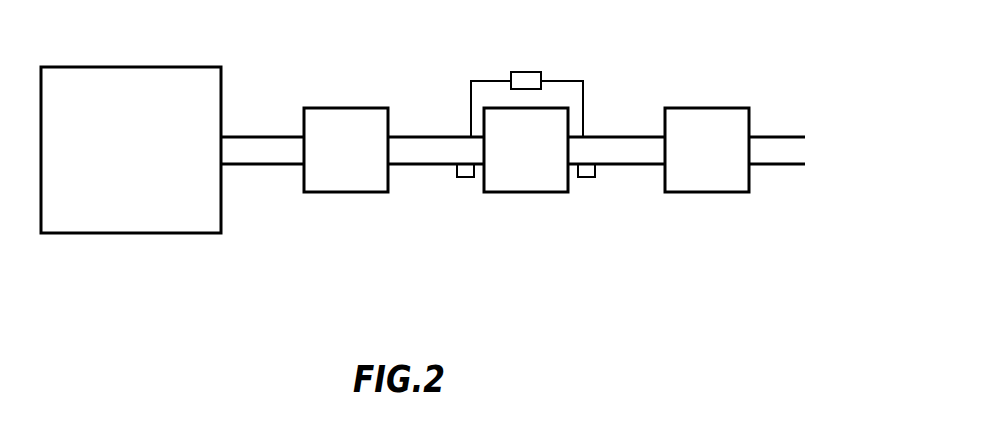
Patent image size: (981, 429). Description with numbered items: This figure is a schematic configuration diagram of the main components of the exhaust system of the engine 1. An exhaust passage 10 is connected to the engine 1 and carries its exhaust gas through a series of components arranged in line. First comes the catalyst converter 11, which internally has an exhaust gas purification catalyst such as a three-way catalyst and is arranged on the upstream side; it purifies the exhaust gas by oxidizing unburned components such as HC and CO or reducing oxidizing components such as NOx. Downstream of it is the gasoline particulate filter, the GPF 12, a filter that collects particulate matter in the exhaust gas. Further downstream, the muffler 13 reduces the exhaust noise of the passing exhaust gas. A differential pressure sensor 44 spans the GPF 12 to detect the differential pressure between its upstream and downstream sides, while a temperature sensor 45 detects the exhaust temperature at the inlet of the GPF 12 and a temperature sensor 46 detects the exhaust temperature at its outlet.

The engine 1 is at (180, 233).
The exhaust passage 10 is at (271, 165).
The catalyst converter 11 is at (359, 108).
The gasoline particulate filter (GPF) 12 is at (528, 193).
The muffler 13 is at (707, 107).
The differential pressure sensor 44 is at (526, 72).
The temperature sensor 45 is at (460, 178).
The temperature sensor 46 is at (582, 180).